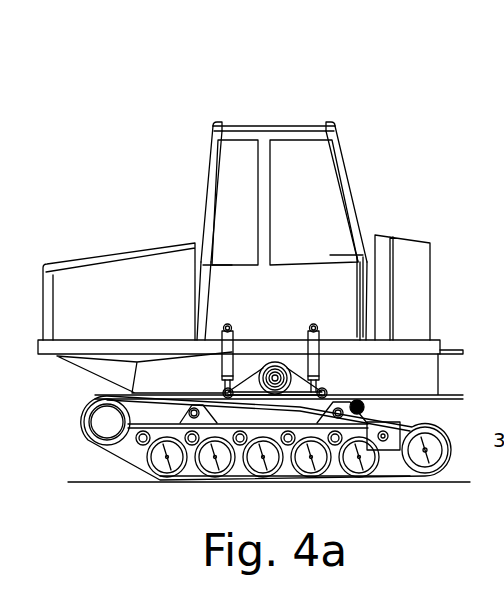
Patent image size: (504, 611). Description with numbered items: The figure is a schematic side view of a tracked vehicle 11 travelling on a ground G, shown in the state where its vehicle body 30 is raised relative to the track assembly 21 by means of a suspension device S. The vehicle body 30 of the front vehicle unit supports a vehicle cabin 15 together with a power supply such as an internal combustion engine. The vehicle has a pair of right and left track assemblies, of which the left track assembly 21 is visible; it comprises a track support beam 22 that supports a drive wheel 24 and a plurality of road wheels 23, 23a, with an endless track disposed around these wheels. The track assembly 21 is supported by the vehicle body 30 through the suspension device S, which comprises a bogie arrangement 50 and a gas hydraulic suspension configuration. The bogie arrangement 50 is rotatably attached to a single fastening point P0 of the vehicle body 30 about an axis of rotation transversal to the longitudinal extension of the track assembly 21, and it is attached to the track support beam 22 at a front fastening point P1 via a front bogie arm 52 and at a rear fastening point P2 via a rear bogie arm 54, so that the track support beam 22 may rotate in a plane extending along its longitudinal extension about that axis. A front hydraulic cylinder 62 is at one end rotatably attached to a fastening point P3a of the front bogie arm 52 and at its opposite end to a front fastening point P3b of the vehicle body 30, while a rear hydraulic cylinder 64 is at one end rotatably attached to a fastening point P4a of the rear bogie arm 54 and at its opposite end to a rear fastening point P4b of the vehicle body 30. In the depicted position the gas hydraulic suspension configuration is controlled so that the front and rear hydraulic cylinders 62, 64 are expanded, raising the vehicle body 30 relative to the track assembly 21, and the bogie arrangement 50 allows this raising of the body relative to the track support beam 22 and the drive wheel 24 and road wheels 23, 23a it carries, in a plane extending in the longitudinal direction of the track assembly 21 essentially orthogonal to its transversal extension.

The tracked vehicle 11 is at (364, 112).
The vehicle cabin 15 is at (266, 120).
The track assembly 21 is at (112, 460).
The track support beam 22 is at (416, 416).
The road wheels 23 is at (184, 472).
The road wheel 23a is at (378, 470).
The drive wheel 24 is at (80, 416).
The vehicle body 30 is at (92, 374).
The bogie arrangement 50 is at (279, 354).
The front bogie arm 52 is at (217, 355).
The rear bogie arm 54 is at (325, 360).
The front hydraulic cylinder 62 is at (218, 378).
The rear hydraulic cylinder 64 is at (326, 383).
The suspension device S is at (265, 350).
The single fastening point P0 is at (277, 381).
The front fastening point P1 is at (195, 417).
The rear fastening point P2 is at (339, 417).
The fastening point of the front bogie arm P3a is at (222, 391).
The front fastening point of the vehicle body P3b is at (224, 328).
The fastening point of the rear bogie arm P4a is at (328, 391).
The rear fastening point of the vehicle body P4b is at (318, 328).
The ground G is at (132, 484).